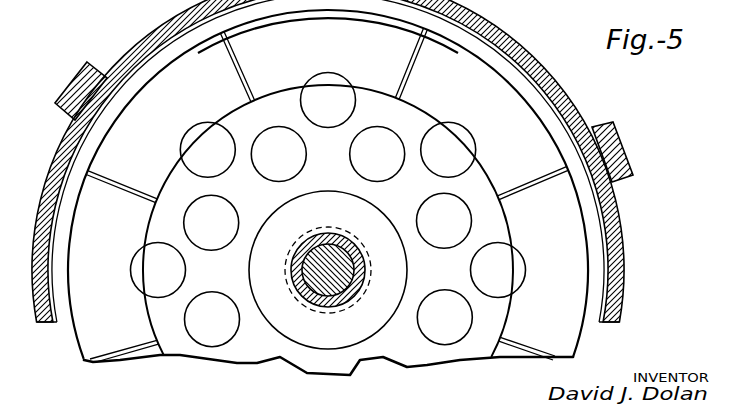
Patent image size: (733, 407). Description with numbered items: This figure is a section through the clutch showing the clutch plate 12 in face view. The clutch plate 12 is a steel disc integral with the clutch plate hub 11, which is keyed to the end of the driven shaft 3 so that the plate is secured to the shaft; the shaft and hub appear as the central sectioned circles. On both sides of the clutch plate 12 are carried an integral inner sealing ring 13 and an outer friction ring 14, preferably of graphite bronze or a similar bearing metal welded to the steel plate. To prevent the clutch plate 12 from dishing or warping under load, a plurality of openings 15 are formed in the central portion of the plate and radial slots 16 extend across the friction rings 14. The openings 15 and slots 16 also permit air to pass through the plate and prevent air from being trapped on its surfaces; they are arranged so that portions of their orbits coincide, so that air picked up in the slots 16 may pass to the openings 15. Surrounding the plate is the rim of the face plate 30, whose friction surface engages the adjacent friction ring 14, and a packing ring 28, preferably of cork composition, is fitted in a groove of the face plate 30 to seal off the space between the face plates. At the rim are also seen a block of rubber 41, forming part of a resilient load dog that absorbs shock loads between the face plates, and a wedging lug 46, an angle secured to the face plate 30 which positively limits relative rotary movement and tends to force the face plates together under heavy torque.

The driven shaft 3 is at (342, 264).
The clutch plate hub 11 is at (350, 285).
The clutch plate 12 is at (217, 352).
The inner sealing rings 13 is at (288, 325).
The outer friction rings 14 is at (87, 342).
The openings 15 is at (333, 78).
The radial slots 16 is at (237, 58).
The packing ring 28 is at (501, 52).
The face plate 30 is at (625, 258).
The block of rubber 41 is at (306, 2).
The wedging lug 46 is at (92, 68).